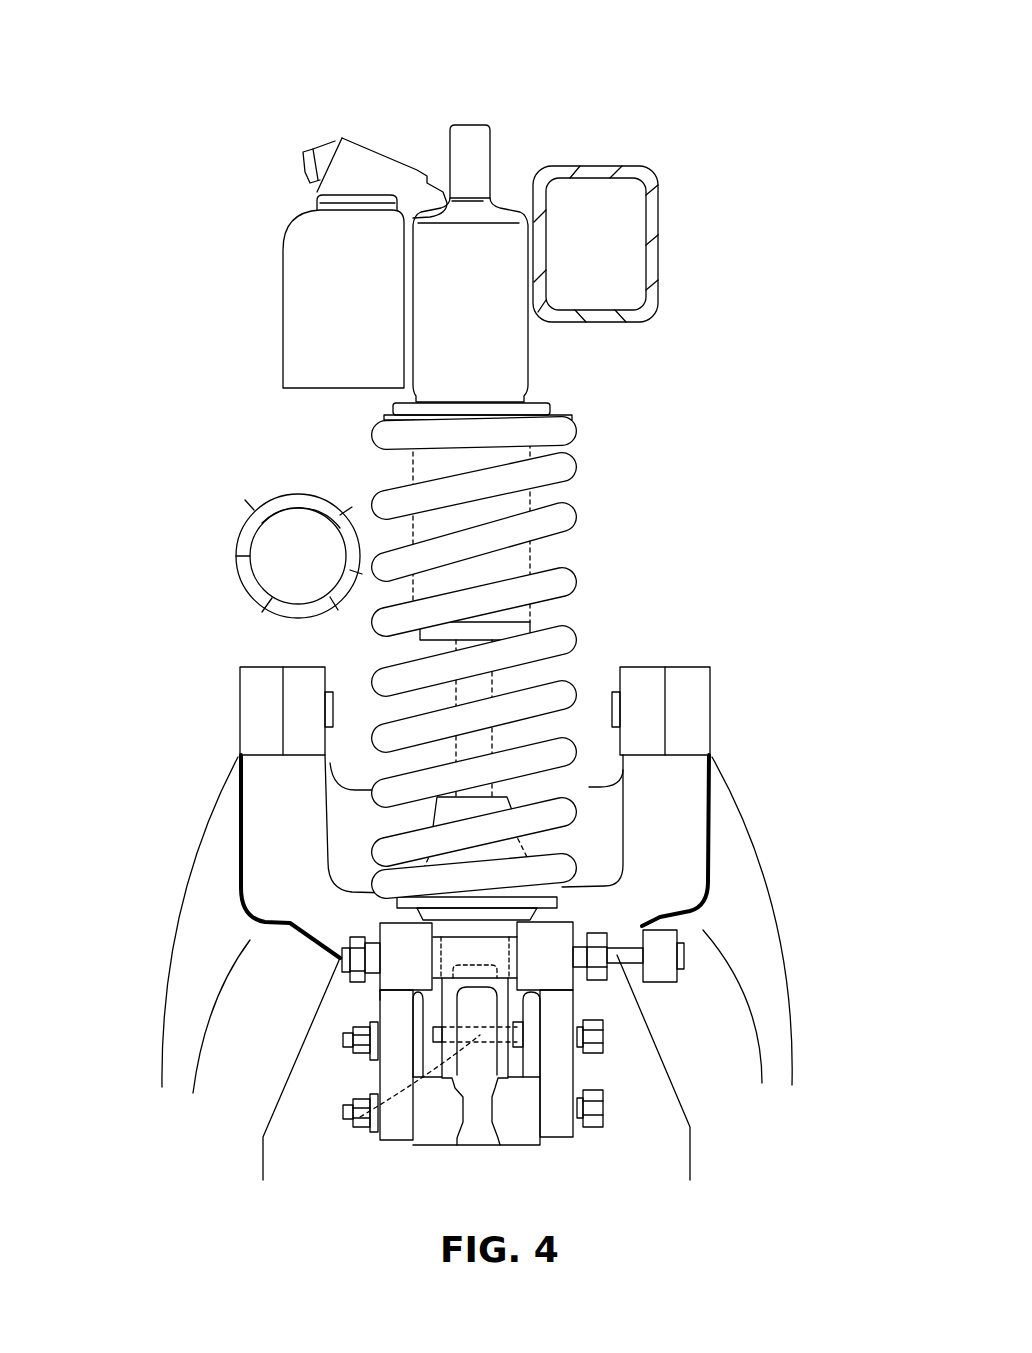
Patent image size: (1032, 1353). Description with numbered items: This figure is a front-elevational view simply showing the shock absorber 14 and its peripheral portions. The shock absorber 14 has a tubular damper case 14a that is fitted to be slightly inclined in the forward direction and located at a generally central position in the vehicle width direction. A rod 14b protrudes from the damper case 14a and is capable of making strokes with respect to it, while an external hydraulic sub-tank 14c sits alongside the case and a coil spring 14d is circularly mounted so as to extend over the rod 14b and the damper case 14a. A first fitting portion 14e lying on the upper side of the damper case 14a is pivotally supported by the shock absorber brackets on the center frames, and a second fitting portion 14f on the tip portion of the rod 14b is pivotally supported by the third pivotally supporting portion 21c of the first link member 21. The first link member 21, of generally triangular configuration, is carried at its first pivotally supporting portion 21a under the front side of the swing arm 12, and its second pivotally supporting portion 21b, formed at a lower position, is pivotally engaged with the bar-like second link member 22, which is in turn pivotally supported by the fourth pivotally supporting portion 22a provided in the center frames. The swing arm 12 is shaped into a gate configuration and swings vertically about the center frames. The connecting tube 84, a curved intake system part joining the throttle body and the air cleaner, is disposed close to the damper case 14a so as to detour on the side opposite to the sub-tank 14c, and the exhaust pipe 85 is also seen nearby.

The swing arm 12 is at (210, 872).
The shock absorber 14 is at (613, 400).
The damper case 14a is at (477, 248).
The rod 14b is at (473, 747).
The external hydraulic sub-tank 14c is at (322, 247).
The coil spring 14d is at (368, 507).
The first fitting portion 14e is at (468, 150).
The second fitting portion 14f is at (498, 1013).
The first link member 21 is at (520, 1137).
The first pivotally supporting portion 21a is at (603, 1043).
The second pivotally supporting portion 21b is at (603, 1105).
The third pivotally supporting portion 21c is at (360, 1117).
The second link member 22 is at (380, 1008).
The fourth pivotally supporting portion 22a is at (617, 948).
The connecting tube 84 is at (612, 163).
The exhaust pipe 85 is at (240, 548).